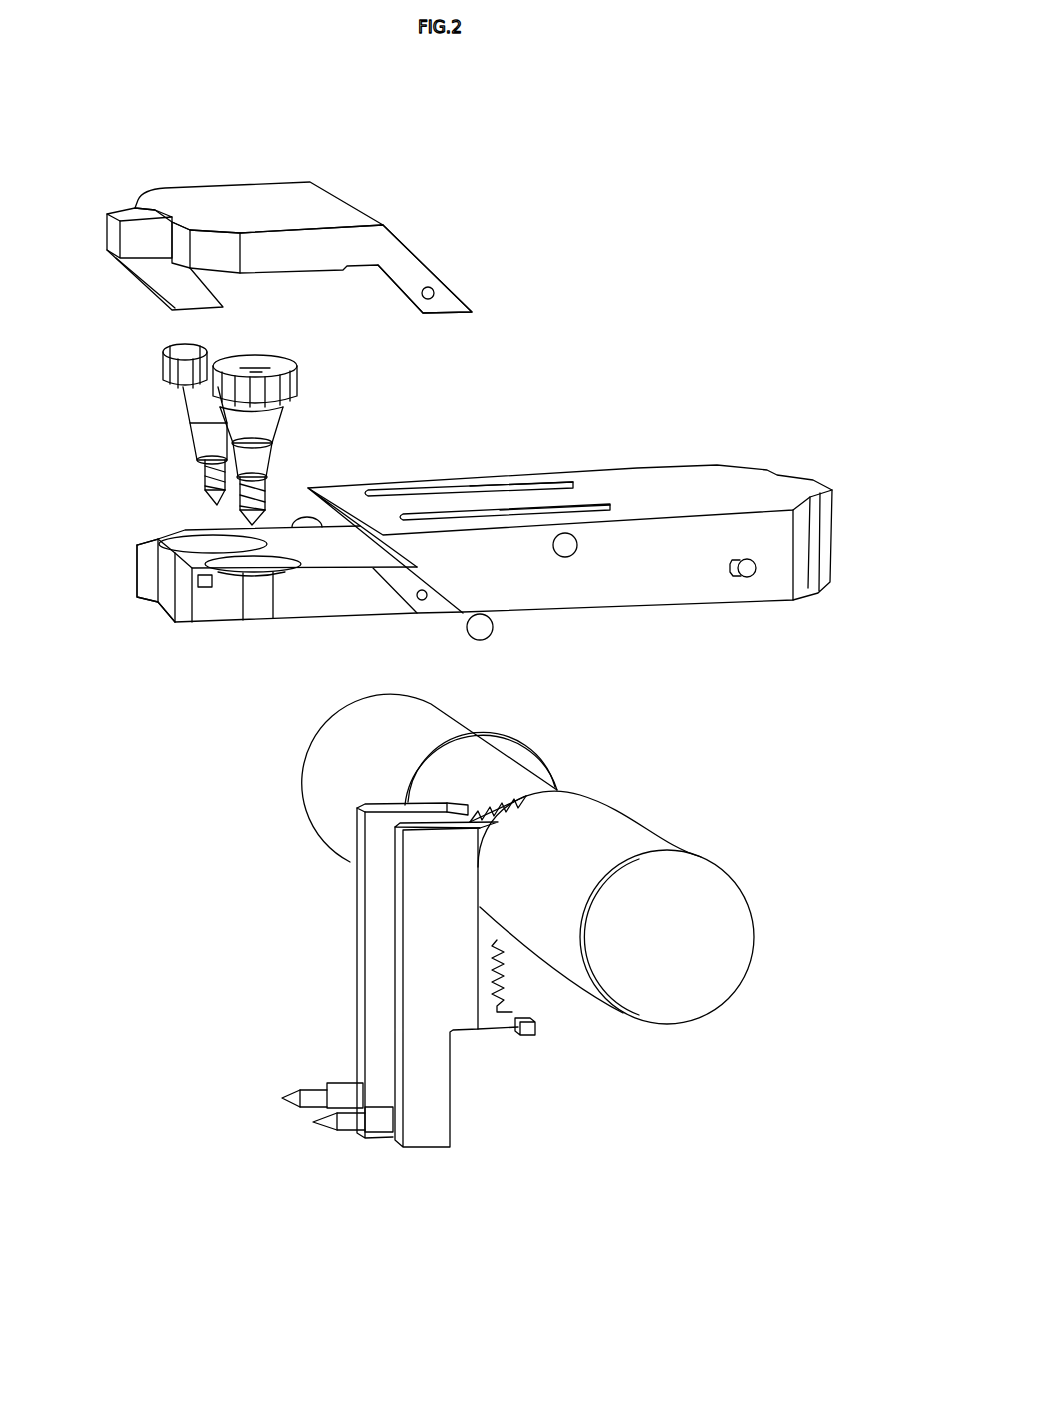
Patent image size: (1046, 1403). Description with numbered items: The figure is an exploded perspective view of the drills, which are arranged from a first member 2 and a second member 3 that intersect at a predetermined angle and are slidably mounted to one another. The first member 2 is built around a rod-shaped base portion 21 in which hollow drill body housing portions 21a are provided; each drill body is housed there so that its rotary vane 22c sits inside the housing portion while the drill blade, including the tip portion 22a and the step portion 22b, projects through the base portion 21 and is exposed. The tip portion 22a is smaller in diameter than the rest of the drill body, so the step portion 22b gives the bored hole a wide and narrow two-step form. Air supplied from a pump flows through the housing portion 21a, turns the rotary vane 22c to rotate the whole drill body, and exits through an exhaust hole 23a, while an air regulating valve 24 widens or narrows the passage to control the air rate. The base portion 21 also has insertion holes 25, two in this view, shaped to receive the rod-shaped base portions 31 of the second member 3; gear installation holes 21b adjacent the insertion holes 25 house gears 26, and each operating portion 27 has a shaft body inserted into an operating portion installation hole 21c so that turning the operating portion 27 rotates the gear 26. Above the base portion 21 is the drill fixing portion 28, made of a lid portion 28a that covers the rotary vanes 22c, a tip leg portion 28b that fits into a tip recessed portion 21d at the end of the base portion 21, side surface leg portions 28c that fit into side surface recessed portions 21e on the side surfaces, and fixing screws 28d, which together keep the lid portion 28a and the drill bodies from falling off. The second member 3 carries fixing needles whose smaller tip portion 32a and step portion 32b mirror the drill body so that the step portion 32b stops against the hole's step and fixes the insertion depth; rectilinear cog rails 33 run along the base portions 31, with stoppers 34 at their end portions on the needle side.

The first member 2 is at (737, 283).
The second member 3 is at (518, 1163).
The base portion 21 is at (670, 483).
The drill body housing portion 21a is at (187, 543).
The gear installation hole 21b is at (538, 510).
The operating portion installation hole 21c is at (577, 550).
The tip recessed portion 21d is at (165, 598).
The side surface recessed portion 21e is at (440, 607).
The tip portion 22a is at (210, 498).
The step portion 22b is at (208, 492).
The rotary vane 22c is at (246, 353).
The exhaust hole 23a is at (208, 588).
The air regulating valve 24 is at (752, 575).
The insertion hole 25 is at (433, 515).
The gear 26 is at (510, 800).
The operating portion 27 is at (438, 722).
The drill fixing portion 28 is at (428, 170).
The lid portion 28a is at (288, 190).
The tip leg portion 28b is at (162, 286).
The side surface leg portion 28c is at (413, 273).
The fixing screw 28d is at (481, 638).
The base portion 31 is at (362, 942).
The tip portion 32a is at (284, 1100).
The step portion 32b is at (297, 1092).
The rectilinear cog rail 33 is at (500, 996).
The stopper 34 is at (528, 1034).